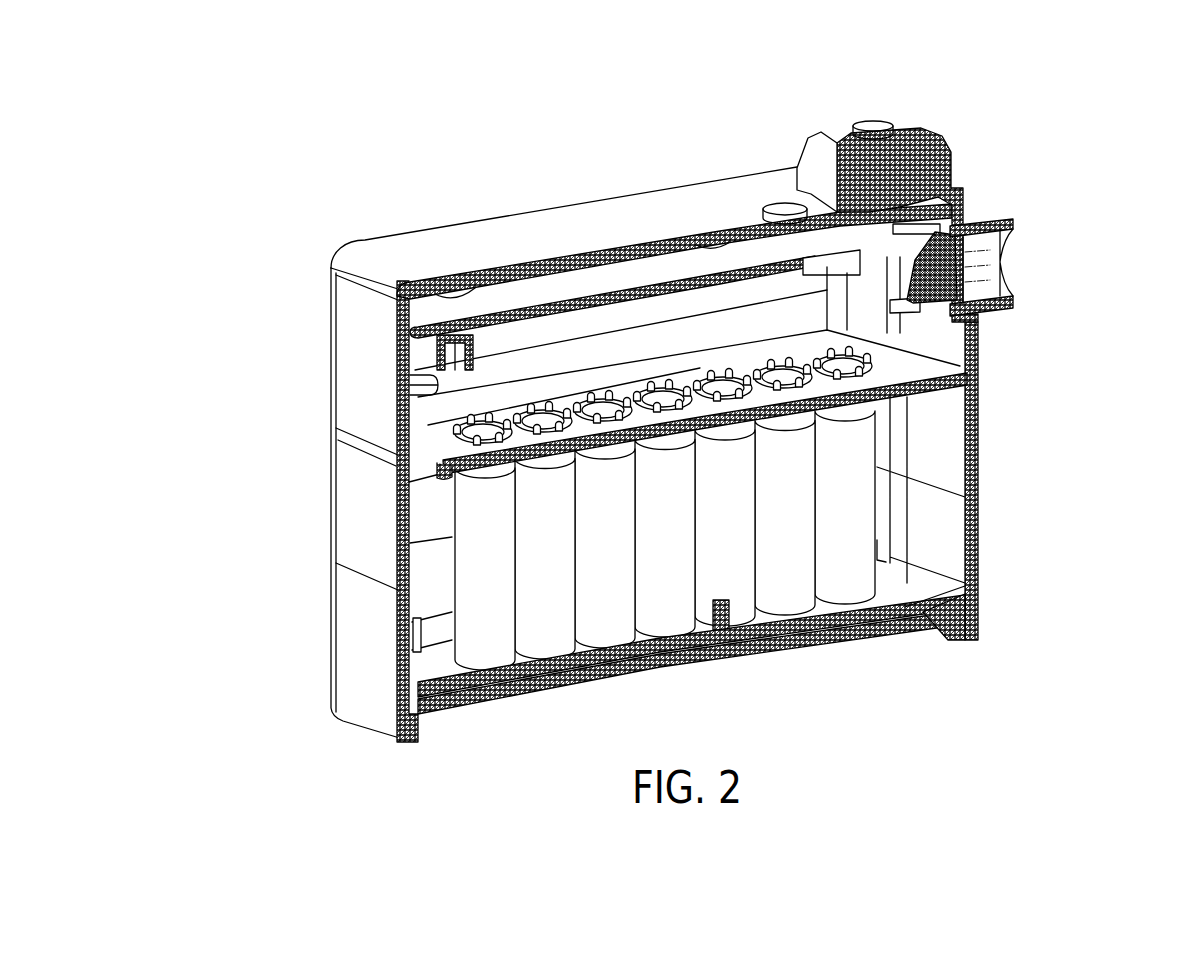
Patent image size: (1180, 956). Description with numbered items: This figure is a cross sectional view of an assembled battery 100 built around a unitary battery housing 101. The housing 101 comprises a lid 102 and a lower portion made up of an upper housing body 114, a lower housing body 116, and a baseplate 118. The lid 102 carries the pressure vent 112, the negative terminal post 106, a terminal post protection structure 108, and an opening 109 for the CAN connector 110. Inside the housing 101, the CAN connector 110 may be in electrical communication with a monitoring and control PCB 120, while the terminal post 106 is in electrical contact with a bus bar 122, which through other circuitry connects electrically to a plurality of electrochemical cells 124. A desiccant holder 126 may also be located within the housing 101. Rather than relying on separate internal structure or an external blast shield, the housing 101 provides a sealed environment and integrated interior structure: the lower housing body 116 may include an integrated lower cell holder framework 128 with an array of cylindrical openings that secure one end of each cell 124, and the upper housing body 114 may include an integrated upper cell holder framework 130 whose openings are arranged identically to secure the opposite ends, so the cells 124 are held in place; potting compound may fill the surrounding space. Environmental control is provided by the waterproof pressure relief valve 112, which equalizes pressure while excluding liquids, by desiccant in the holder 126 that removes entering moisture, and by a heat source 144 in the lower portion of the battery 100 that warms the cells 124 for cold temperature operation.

The battery 100 is at (300, 101).
The unitary battery housing 101 is at (324, 428).
The lid 102 is at (485, 237).
The negative terminal post 106 is at (870, 115).
The terminal post protection structure 108 is at (950, 167).
The opening 109 is at (963, 323).
The CAN connector 110 is at (977, 250).
The pressure vent 112 is at (783, 203).
The upper housing body 114 is at (358, 488).
The lower housing body 116 is at (373, 637).
The baseplate 118 is at (627, 680).
The monitoring and control PCB 120 is at (553, 283).
The bus bar 122 is at (523, 333).
The electrochemical cells 124 is at (837, 540).
The desiccant holder 126 is at (763, 529).
The lower cell holder framework 128 is at (897, 578).
The upper cell holder framework 130 is at (440, 463).
The heat source 144 is at (980, 597).